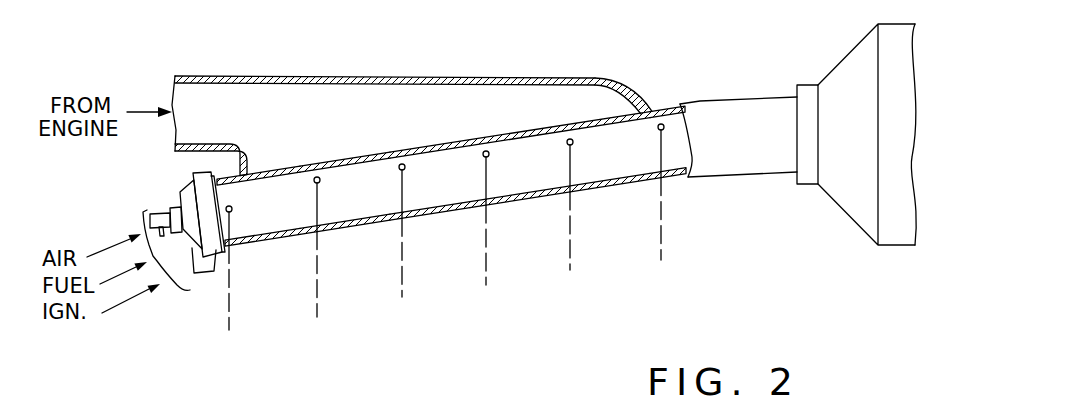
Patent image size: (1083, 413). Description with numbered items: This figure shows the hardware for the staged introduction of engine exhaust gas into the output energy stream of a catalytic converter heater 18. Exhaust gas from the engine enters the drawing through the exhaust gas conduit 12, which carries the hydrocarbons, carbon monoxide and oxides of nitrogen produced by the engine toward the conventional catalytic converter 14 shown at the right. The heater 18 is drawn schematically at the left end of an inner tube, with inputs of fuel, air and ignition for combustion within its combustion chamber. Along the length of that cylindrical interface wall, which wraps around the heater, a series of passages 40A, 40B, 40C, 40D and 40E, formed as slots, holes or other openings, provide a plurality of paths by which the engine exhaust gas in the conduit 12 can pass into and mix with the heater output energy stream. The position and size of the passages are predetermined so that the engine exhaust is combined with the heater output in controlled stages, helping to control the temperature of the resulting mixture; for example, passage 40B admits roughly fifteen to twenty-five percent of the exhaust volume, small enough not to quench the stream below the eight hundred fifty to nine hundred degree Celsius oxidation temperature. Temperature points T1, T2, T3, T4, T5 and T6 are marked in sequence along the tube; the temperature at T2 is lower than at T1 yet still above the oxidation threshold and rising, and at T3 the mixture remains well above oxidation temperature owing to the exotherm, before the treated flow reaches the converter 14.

The exhaust gas conduit 12 is at (293, 77).
The catalytic converter 14 is at (850, 82).
The catalytic converter heater 18 is at (166, 185).
The passage 40A is at (268, 170).
The passage 40B is at (355, 154).
The passage 40C is at (438, 145).
The passage 40D is at (520, 132).
The passage 40E is at (613, 110).
The temperature point T1 is at (231, 281).
The temperature point T2 is at (320, 260).
The temperature point T3 is at (403, 246).
The temperature point T4 is at (483, 233).
The temperature point T5 is at (568, 222).
The temperature point T6 is at (663, 207).